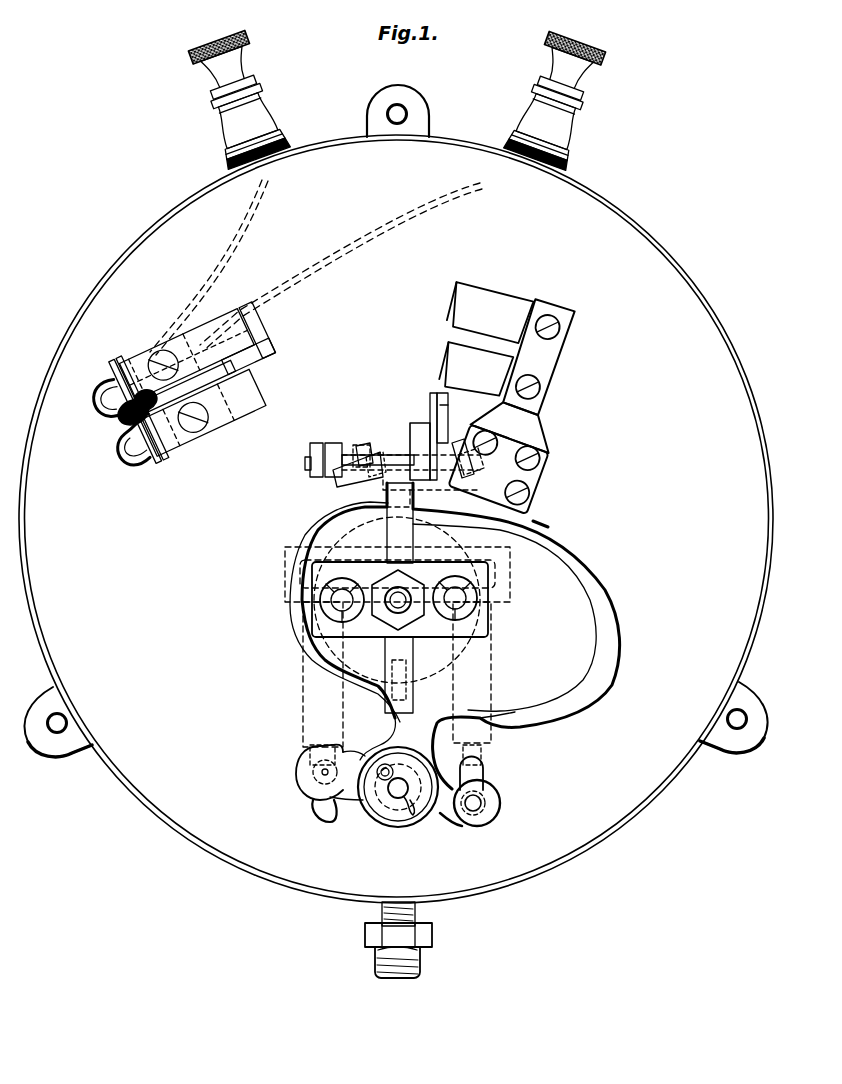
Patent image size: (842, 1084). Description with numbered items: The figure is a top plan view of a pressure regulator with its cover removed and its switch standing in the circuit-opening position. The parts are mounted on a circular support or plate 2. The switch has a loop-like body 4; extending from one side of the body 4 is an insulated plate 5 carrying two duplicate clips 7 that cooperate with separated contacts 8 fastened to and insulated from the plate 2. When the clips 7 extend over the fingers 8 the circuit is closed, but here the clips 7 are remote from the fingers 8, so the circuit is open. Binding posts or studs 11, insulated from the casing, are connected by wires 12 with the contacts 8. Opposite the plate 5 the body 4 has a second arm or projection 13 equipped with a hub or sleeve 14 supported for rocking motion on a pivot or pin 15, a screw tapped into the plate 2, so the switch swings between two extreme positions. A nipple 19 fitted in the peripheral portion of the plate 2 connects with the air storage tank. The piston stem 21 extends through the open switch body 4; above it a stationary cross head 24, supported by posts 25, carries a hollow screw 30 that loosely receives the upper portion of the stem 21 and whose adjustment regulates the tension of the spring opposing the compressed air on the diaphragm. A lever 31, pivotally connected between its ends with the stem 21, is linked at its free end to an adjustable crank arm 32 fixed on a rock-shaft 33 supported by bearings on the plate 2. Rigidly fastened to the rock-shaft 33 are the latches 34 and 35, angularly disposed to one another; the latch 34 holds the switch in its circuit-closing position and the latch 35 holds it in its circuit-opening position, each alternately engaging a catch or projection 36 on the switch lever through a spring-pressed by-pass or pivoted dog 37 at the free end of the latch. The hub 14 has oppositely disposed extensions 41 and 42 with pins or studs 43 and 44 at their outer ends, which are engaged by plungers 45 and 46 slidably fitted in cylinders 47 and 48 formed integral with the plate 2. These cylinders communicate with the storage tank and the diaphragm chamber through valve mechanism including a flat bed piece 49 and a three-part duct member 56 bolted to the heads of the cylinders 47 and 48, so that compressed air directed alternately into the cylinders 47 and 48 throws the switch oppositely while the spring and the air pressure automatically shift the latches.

The support or plate 2 is at (396, 494).
The switch body 4 is at (612, 652).
The plate 5 is at (556, 420).
The clips 7 is at (478, 340).
The contacts 8 is at (217, 310).
The binding posts 11 is at (397, 99).
The wires 12 is at (257, 208).
The second arm or projection 13 is at (396, 772).
The hub or sleeve 14 is at (367, 802).
The pivot or pin 15 is at (407, 790).
The nipple 19 is at (417, 915).
The stem 21 is at (405, 653).
The cross head 24 is at (480, 625).
The posts or uprights 25 is at (335, 600).
The screw 30 is at (397, 618).
The lever 31 is at (400, 603).
The adjustable crank arm 32 is at (433, 412).
The rock-shaft 33 is at (313, 472).
The latch 34 is at (364, 447).
The latch 35 is at (448, 447).
The catch or projection 36 is at (520, 445).
The by-pass device or pivoted dog 37 is at (340, 482).
The extension 41 is at (307, 780).
The extension 42 is at (499, 813).
The pin or stud 43 is at (320, 817).
The pin or stud 44 is at (473, 803).
The plunger 45 is at (307, 755).
The plunger 46 is at (483, 753).
The cylinder 47 is at (317, 720).
The cylinder 48 is at (478, 709).
The bed piece 49 is at (540, 522).
The three-part duct member 56 is at (512, 562).